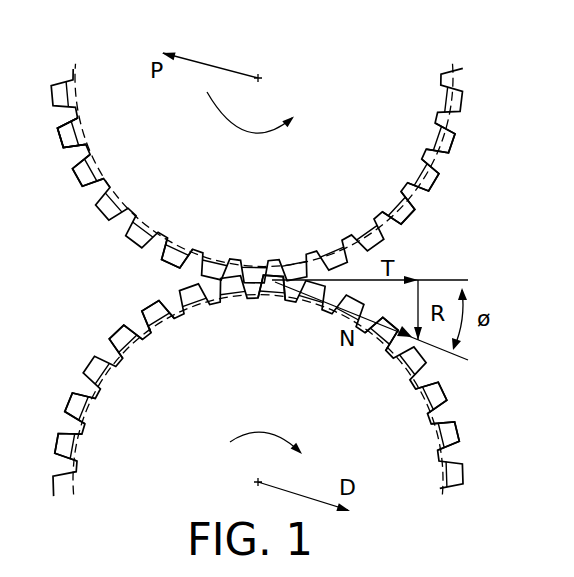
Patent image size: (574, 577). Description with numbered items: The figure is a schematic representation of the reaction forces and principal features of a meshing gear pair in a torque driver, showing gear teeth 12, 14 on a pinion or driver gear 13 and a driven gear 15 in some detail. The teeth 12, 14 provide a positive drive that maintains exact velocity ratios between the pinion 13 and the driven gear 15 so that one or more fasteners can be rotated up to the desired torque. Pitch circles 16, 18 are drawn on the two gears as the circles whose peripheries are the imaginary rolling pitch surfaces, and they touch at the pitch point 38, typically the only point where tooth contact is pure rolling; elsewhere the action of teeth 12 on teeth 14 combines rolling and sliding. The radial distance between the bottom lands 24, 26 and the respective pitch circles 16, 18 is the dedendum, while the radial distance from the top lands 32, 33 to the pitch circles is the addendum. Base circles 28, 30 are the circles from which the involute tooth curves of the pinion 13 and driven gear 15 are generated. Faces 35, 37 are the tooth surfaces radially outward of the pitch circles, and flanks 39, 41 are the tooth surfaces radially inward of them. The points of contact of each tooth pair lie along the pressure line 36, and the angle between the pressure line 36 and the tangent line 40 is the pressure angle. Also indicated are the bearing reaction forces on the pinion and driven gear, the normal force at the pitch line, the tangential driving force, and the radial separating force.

The gear teeth 12 is at (450, 123).
The pinion or driver gear 13 is at (192, 208).
The gear teeth 14 is at (460, 427).
The driven gear 15 is at (388, 467).
The pitch circle 16 is at (415, 197).
The pitch circle 18 is at (450, 457).
The bottom land 24 is at (78, 117).
The bottom land 26 is at (95, 398).
The base circle 28 is at (100, 173).
The base circle 30 is at (133, 347).
The top land 32 is at (60, 150).
The top land 33 is at (115, 330).
The face 35 is at (433, 177).
The pressure line 36 is at (375, 338).
The face 37 is at (62, 430).
The pitch point 38 is at (274, 288).
The flank 39 is at (437, 127).
The tangent line 40 is at (430, 280).
The flank 41 is at (430, 400).